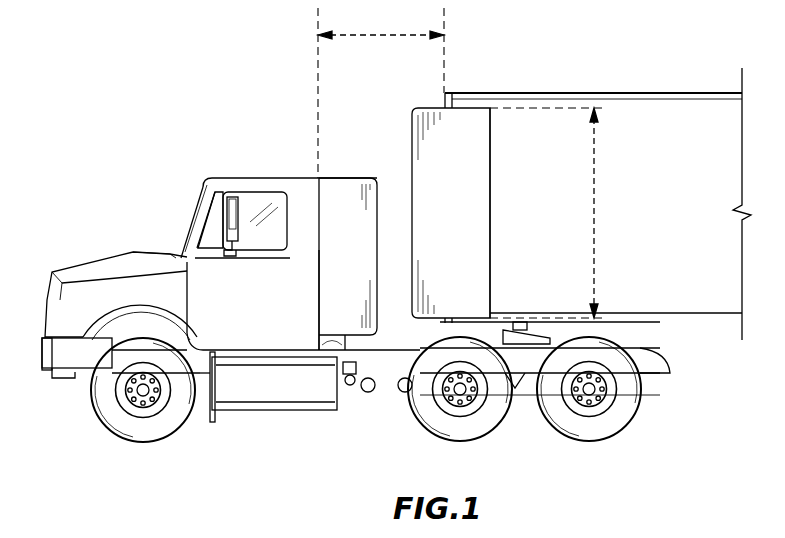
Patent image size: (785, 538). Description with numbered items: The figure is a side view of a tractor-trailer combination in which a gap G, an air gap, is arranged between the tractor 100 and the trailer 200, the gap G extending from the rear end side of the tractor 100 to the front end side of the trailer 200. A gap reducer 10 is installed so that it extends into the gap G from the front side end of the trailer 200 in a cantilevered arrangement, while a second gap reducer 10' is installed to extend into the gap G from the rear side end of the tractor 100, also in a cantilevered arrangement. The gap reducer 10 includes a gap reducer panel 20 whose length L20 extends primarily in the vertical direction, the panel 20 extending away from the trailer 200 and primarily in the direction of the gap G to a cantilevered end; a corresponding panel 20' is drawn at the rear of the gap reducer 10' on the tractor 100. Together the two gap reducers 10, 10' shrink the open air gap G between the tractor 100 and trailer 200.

The tractor 100 is at (235, 178).
The gap reducer 10' is at (326, 244).
The gap reducer 10 is at (426, 195).
The gap reducer panel 20 is at (517, 213).
The rear panel of fairing 20' is at (286, 294).
The trailer 200 is at (648, 92).
The length of gap reducer panel L20 is at (595, 250).
The gap G is at (362, 32).